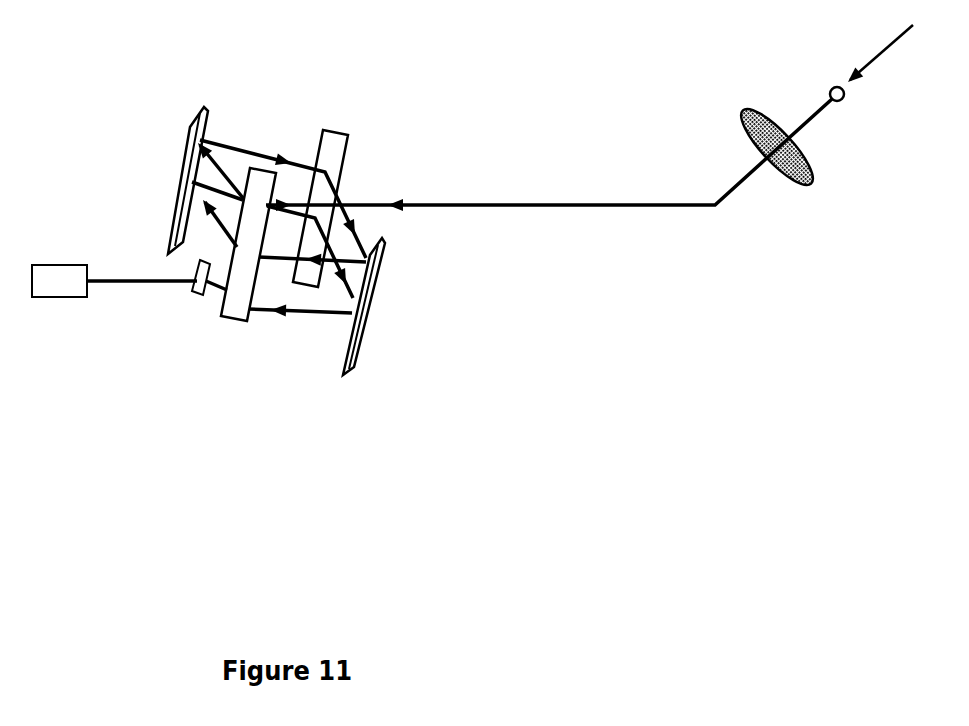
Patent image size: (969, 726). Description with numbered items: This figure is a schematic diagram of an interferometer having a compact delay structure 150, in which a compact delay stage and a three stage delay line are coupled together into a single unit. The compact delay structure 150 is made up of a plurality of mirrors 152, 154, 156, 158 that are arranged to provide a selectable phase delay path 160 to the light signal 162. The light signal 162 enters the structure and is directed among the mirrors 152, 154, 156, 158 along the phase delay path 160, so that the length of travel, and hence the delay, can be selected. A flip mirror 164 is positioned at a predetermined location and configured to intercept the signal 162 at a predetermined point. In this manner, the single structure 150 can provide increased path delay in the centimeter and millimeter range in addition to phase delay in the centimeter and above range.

The compact delay structure 150 is at (388, 452).
The mirror 152 is at (247, 322).
The mirror 154 is at (167, 223).
The mirror 156 is at (345, 158).
The mirror 158 is at (380, 297).
The selectable phase delay path 160 is at (275, 148).
The light signal 162 is at (405, 196).
The flip mirror 164 is at (197, 295).